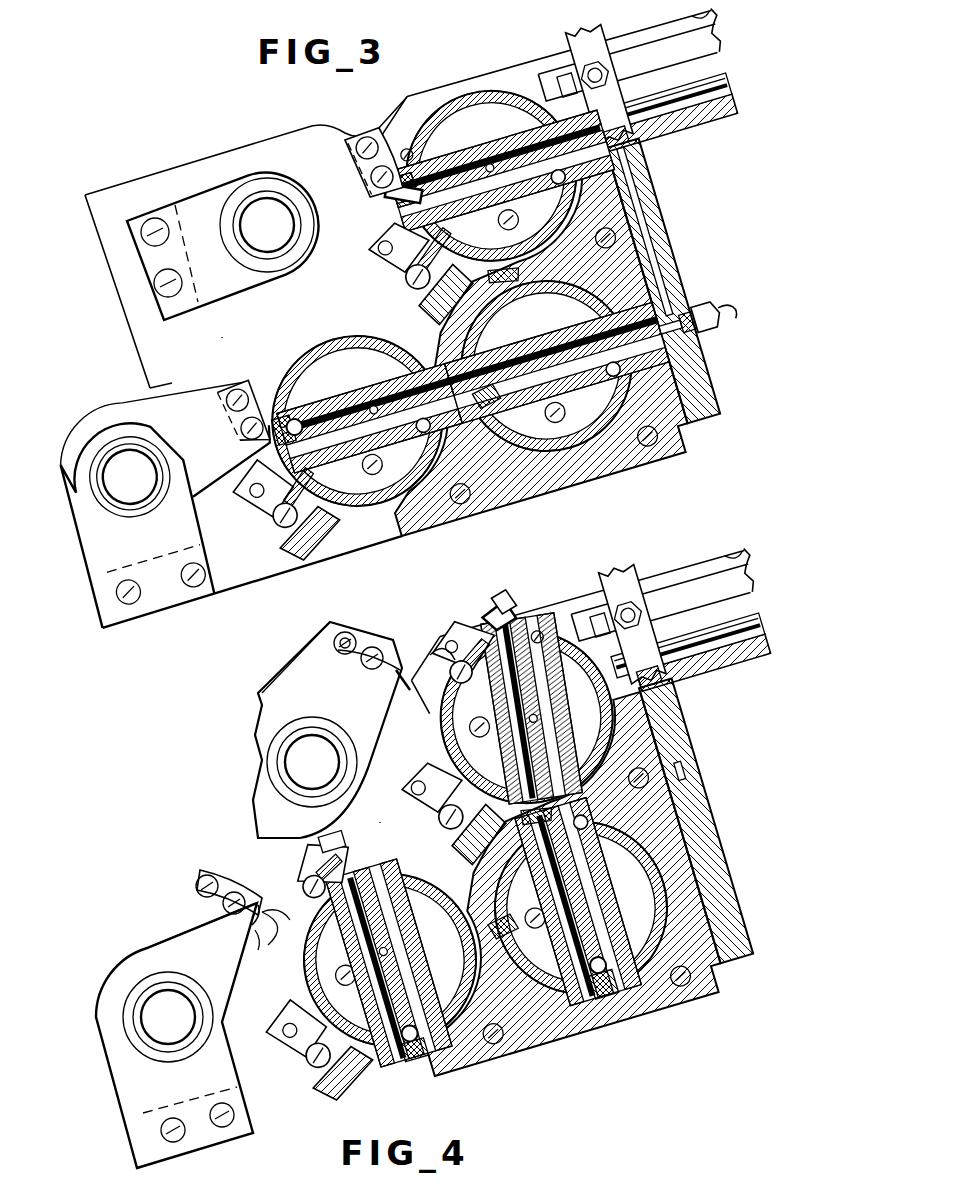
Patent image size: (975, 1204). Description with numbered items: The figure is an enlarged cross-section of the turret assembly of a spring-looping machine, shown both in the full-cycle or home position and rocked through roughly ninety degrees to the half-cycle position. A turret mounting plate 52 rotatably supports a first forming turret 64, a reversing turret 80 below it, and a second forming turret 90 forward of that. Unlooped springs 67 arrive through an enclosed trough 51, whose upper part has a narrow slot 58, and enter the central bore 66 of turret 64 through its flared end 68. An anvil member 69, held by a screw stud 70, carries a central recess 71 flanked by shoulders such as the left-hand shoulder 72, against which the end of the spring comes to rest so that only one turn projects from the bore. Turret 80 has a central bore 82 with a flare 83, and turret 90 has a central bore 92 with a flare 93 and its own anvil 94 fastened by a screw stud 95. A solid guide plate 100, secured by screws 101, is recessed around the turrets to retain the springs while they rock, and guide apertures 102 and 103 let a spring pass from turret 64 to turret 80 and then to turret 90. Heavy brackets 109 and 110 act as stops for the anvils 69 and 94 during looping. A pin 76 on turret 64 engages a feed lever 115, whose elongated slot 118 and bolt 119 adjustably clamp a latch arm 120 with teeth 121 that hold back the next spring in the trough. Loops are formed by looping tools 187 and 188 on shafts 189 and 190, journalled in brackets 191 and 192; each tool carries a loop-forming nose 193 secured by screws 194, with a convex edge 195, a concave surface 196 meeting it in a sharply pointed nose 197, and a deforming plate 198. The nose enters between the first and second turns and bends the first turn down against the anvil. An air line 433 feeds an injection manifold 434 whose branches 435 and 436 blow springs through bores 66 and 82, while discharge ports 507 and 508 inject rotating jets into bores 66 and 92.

In FIG. 3, the trough 51 is at (718, 110).
In FIG. 4, the trough 51 is at (718, 675).
In FIG. 3, the turret mounting plate 52 is at (211, 336).
In FIG. 4, the turret mounting plate 52 is at (369, 821).
In FIG. 3, the narrow slot 58 is at (716, 85).
In FIG. 4, the narrow slot 58 is at (712, 650).
In FIG. 3, the first forming turret 64 is at (458, 97).
In FIG. 4, the first forming turret 64 is at (551, 701).
In FIG. 3, the central bore 66 is at (527, 152).
In FIG. 4, the central bore 66 is at (545, 752).
In FIG. 3, the spring 67 is at (447, 177).
In FIG. 4, the spring 67 is at (622, 674).
In FIG. 3, the flared end 68 is at (558, 188).
In FIG. 3, the anvil member 69 is at (378, 252).
In FIG. 4, the anvil member 69 is at (462, 636).
In FIG. 3, the screw stud 70 is at (410, 272).
In FIG. 4, the screw stud 70 is at (462, 680).
In FIG. 3, the central recess 71 is at (395, 215).
In FIG. 4, the central recess 71 is at (478, 622).
In FIG. 4, the left-hand shoulder 72 is at (500, 612).
In FIG. 3, the pin 76 is at (406, 150).
In FIG. 4, the pin 76 is at (538, 634).
In FIG. 3, the reversing turret 80 is at (499, 336).
In FIG. 4, the reversing turret 80 is at (529, 901).
In FIG. 3, the central bore 82 is at (576, 353).
In FIG. 4, the central bore 82 is at (588, 946).
In FIG. 3, the flare 83 is at (608, 364).
In FIG. 4, the flare 83 is at (590, 846).
In FIG. 3, the second forming turret 90 is at (329, 475).
In FIG. 4, the second forming turret 90 is at (421, 970).
In FIG. 3, the central bore 92 is at (342, 412).
In FIG. 4, the central bore 92 is at (405, 1000).
In FIG. 3, the flare 93 is at (412, 432).
In FIG. 3, the anvil 94 is at (262, 494).
In FIG. 4, the anvil 94 is at (328, 870).
In FIG. 3, the screw stud 95 is at (276, 522).
In FIG. 4, the screw stud 95 is at (318, 886).
In FIG. 3, the guide plate 100 is at (596, 470).
In FIG. 4, the guide plate 100 is at (495, 1076).
In FIG. 3, the screws 101 is at (604, 238).
In FIG. 4, the screws 101 is at (510, 1046).
In FIG. 3, the guide aperture 102 is at (518, 262).
In FIG. 4, the guide aperture 102 is at (535, 848).
In FIG. 3, the guide aperture 103 is at (492, 396).
In FIG. 4, the guide aperture 103 is at (487, 928).
In FIG. 3, the bracket 109 is at (428, 305).
In FIG. 4, the bracket 109 is at (462, 852).
In FIG. 3, the bracket 110 is at (302, 549).
In FIG. 4, the bracket 110 is at (318, 1086).
In FIG. 3, the feed lever 115 is at (505, 82).
In FIG. 4, the feed lever 115 is at (530, 600).
In FIG. 3, the elongated slot 118 is at (662, 26).
In FIG. 4, the elongated slot 118 is at (720, 572).
In FIG. 3, the bolt 119 is at (586, 63).
In FIG. 4, the bolt 119 is at (627, 590).
In FIG. 3, the latch arm 120 is at (589, 101).
In FIG. 4, the latch arm 120 is at (630, 556).
In FIG. 3, the teeth 121 is at (628, 122).
In FIG. 4, the teeth 121 is at (668, 654).
In FIG. 3, the looping tool 187 is at (312, 168).
In FIG. 4, the looping tool 187 is at (313, 668).
In FIG. 3, the looping tool 188 is at (196, 413).
In FIG. 4, the looping tool 188 is at (180, 930).
In FIG. 3, the shaft 189 is at (255, 231).
In FIG. 4, the shaft 189 is at (316, 752).
In FIG. 3, the shaft 190 is at (146, 478).
In FIG. 4, the shaft 190 is at (158, 1013).
In FIG. 3, the bracket 191 is at (208, 200).
In FIG. 4, the bracket 191 is at (280, 735).
In FIG. 3, the bracket 192 is at (98, 539).
In FIG. 4, the bracket 192 is at (140, 1072).
In FIG. 4, the loop-forming nose 193 is at (401, 684).
In FIG. 4, the screws 194 is at (338, 643).
In FIG. 4, the convex edge 195 is at (447, 660).
In FIG. 4, the concave surface 196 is at (264, 932).
In FIG. 4, the pointed nose 197 is at (270, 920).
In FIG. 4, the deforming plate 198 is at (352, 628).
In FIG. 3, the air line 433 is at (735, 302).
In FIG. 3, the injection manifold 434 is at (710, 400).
In FIG. 4, the injection manifold 434 is at (735, 920).
In FIG. 3, the branch 435 is at (640, 188).
In FIG. 3, the branch 436 is at (704, 352).
In FIG. 3, the outlet discharge port 507 is at (489, 168).
In FIG. 4, the outlet discharge port 507 is at (535, 718).
In FIG. 3, the injection port 508 is at (375, 413).
In FIG. 4, the injection port 508 is at (375, 960).